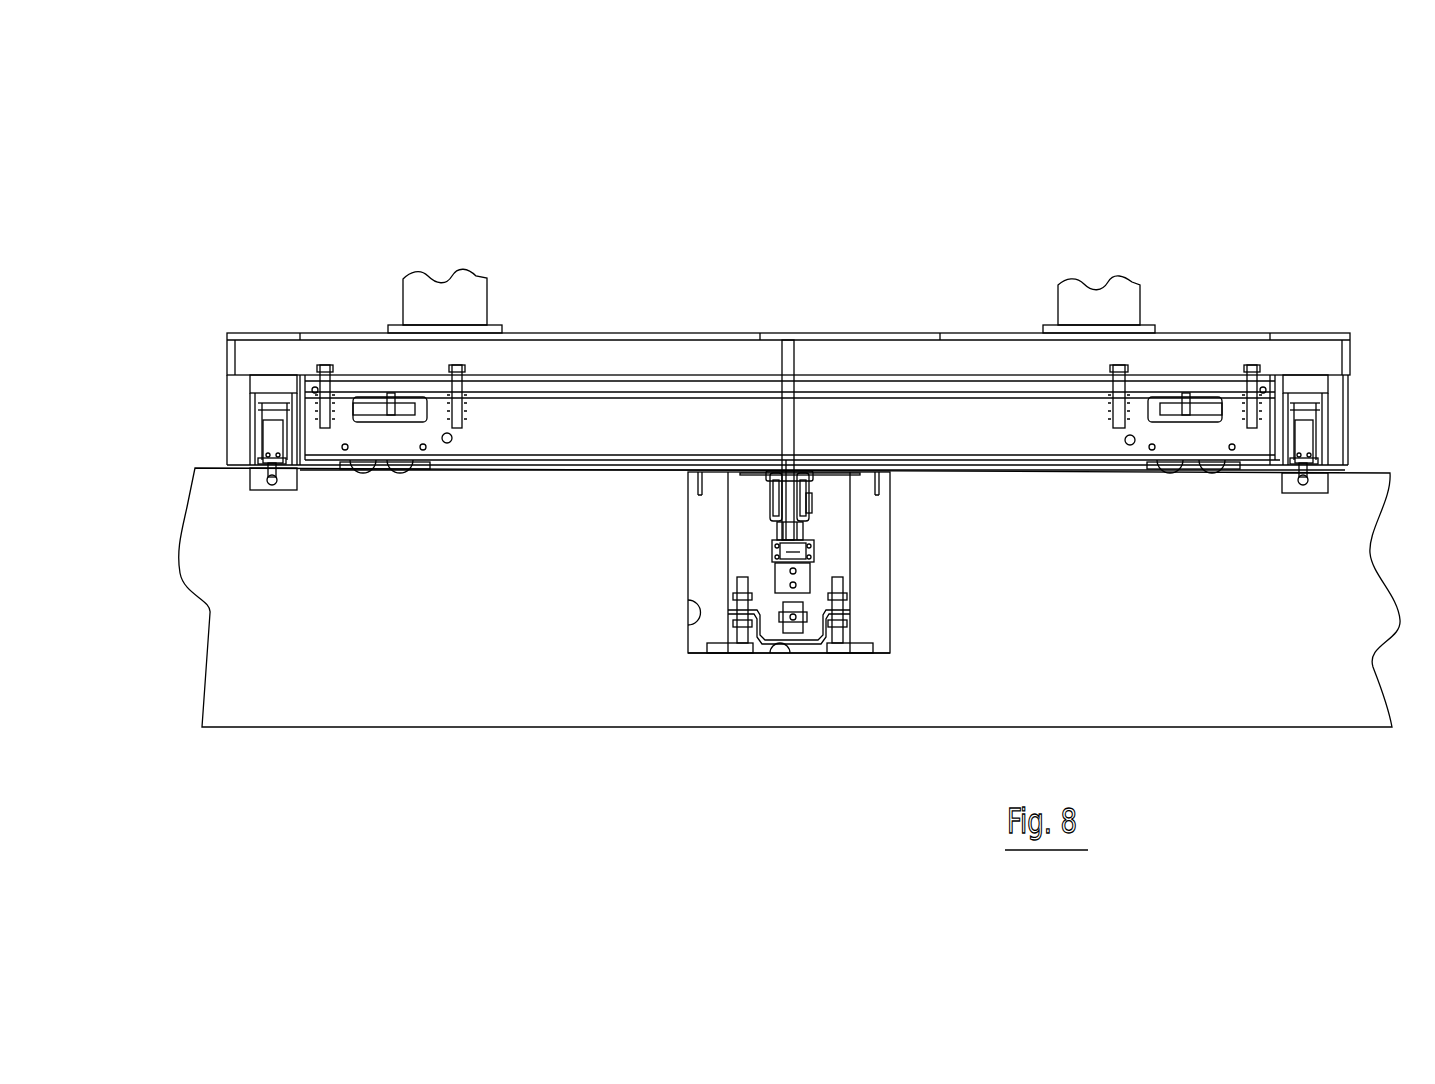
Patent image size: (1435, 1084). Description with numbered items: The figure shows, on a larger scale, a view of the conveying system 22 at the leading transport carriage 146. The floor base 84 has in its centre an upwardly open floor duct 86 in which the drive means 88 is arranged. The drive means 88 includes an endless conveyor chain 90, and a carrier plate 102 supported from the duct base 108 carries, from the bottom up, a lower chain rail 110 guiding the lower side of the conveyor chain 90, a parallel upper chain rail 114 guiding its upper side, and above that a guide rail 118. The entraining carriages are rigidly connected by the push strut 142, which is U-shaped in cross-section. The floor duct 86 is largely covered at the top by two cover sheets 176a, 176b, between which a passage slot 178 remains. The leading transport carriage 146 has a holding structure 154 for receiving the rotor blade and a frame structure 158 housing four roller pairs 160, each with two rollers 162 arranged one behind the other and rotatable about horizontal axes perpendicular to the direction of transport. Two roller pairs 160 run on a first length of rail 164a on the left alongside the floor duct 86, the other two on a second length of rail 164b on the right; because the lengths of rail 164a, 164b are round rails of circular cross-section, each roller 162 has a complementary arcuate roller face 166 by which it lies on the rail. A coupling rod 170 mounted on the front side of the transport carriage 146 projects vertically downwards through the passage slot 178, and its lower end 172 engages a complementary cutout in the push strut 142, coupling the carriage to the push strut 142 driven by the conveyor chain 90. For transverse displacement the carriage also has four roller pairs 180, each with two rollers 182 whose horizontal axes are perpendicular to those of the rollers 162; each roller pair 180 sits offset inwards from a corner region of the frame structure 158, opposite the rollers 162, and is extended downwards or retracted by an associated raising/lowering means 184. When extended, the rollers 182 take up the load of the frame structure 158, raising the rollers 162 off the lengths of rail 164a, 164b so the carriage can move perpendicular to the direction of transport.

The conveying system 22 is at (971, 486).
The floor base 84 is at (433, 687).
The floor duct 86 is at (680, 623).
The drive means 88 is at (866, 583).
The conveyor chain 90 is at (832, 542).
The carrier plate 102 is at (740, 522).
The duct base 108 is at (773, 655).
The lower chain rail 110 is at (812, 637).
The upper chain rail 114 is at (778, 570).
The guide rail 118 is at (812, 503).
The push strut 142 is at (737, 472).
The leading transport carriage 146 is at (1268, 326).
The holding structure 154 is at (496, 297).
The frame structure 158 is at (937, 340).
The roller pair 160 is at (258, 441).
The roller 162 is at (280, 478).
The first length of rail 164a is at (272, 482).
The second length of rail 164b is at (1305, 482).
The roller face 166 is at (282, 493).
The coupling rod 170 is at (790, 360).
The lower end 172 is at (783, 470).
The cover sheet 176a is at (768, 478).
The cover sheet 176b is at (815, 478).
The passage slot 178 is at (793, 470).
The roller pair 180 is at (402, 480).
The roller 182 is at (372, 468).
The raising/lowering means 184 is at (426, 431).